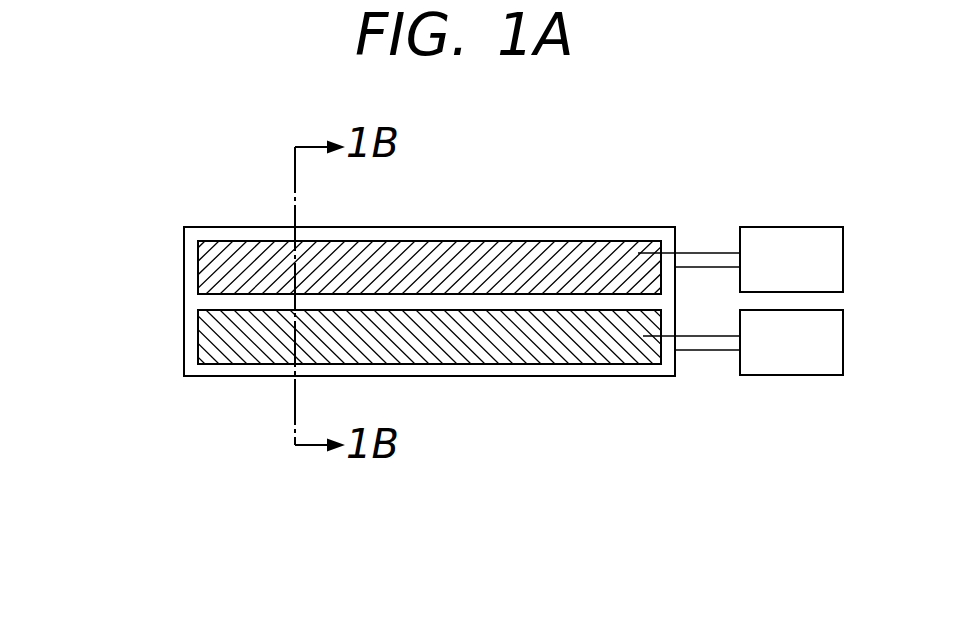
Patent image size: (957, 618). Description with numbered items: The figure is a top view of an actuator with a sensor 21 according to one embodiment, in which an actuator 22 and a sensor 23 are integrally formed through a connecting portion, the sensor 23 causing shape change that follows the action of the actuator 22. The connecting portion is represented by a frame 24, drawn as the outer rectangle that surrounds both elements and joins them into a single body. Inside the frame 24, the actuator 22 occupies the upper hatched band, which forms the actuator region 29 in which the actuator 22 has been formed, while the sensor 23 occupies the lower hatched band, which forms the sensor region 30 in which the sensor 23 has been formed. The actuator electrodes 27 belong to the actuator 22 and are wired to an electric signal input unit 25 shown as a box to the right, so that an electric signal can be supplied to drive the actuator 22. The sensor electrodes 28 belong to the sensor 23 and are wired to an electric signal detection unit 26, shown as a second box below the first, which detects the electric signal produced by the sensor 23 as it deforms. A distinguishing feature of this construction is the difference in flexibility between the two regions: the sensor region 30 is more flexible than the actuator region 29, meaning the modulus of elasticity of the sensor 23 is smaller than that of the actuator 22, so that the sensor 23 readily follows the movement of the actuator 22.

The actuator with a sensor 21 is at (211, 162).
The actuator 22 is at (168, 263).
The sensor 23 is at (168, 333).
The frame 24 is at (190, 377).
The electric signal input unit 25 is at (740, 259).
The electric signal detection unit 26 is at (743, 342).
The actuator electrodes 27 is at (478, 253).
The sensor electrodes 28 is at (479, 348).
The actuator region 29 is at (584, 241).
The sensor region 30 is at (580, 365).